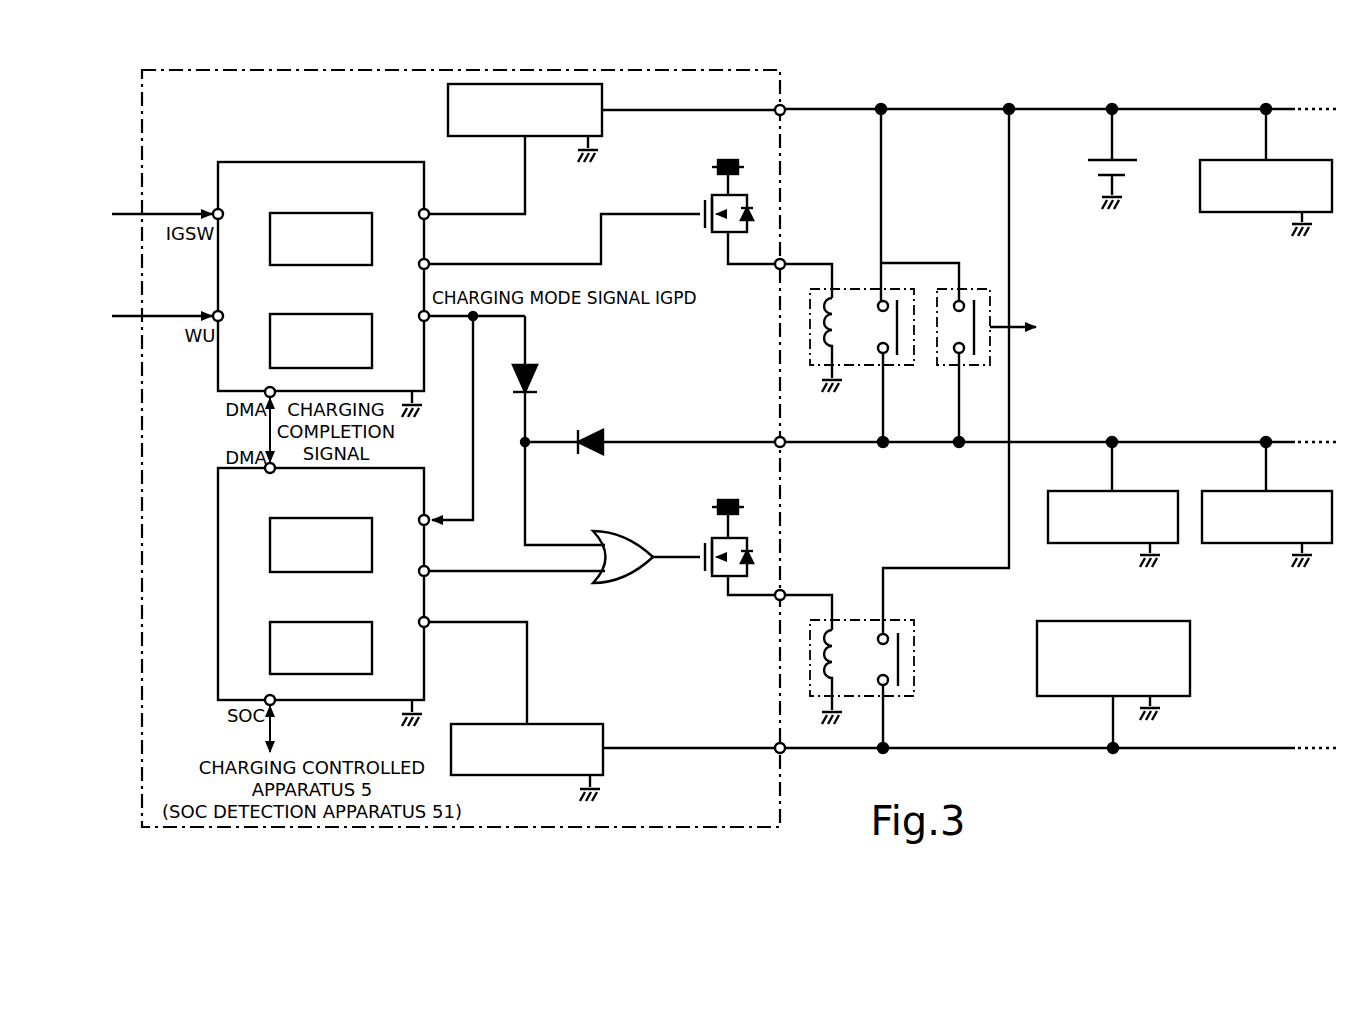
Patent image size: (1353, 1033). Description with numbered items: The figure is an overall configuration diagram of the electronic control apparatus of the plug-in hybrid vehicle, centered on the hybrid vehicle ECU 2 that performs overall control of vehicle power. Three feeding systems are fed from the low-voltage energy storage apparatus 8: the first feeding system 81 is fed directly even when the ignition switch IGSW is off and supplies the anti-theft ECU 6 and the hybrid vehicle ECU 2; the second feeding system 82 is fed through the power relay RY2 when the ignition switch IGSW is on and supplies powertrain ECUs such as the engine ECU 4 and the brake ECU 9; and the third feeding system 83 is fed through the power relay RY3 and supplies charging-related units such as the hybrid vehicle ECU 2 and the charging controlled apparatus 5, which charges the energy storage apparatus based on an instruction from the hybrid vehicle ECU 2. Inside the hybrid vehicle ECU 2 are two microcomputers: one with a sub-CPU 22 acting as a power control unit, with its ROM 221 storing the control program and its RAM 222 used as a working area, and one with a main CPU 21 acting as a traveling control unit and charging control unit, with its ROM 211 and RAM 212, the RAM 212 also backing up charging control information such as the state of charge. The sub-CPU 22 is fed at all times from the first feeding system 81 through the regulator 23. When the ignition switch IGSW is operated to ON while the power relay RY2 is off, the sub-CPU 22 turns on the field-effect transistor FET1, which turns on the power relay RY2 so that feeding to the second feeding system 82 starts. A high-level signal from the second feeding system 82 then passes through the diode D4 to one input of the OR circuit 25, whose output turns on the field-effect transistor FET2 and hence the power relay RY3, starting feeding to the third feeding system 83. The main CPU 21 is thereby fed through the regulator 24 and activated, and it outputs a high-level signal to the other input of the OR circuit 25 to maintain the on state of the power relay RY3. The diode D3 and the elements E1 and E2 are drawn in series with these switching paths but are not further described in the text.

The hybrid vehicle ECU 2 is at (782, 82).
The engine ECU 4 is at (1232, 545).
The charging controlled apparatus 5 is at (1078, 698).
The anti-theft ECU 6 is at (1230, 214).
The low-voltage energy storage apparatus 8 is at (1094, 162).
The brake ECU 9 is at (1078, 545).
The main CPU 21 is at (351, 606).
The sub-CPU 22 is at (349, 266).
The regulator 23 is at (490, 137).
The regulator 24 is at (588, 724).
The OR circuit 25 is at (618, 584).
The first feeding system 81 is at (1172, 107).
The second feeding system 82 is at (1043, 440).
The third feeding system 83 is at (942, 746).
The ROM 211 is at (376, 518).
The RAM 212 is at (376, 622).
The ROM 221 is at (376, 213).
The RAM 222 is at (376, 314).
The diode D3 is at (533, 366).
The diode D4 is at (598, 431).
The fuse element E1 is at (732, 500).
The fuse element E2 is at (732, 160).
The field-effect transistor FET1 is at (718, 232).
The field-effect transistor FET2 is at (718, 576).
The power relay RY2 is at (872, 368).
The power relay RY3 is at (872, 698).
The ignition switch IGSW is at (948, 368).